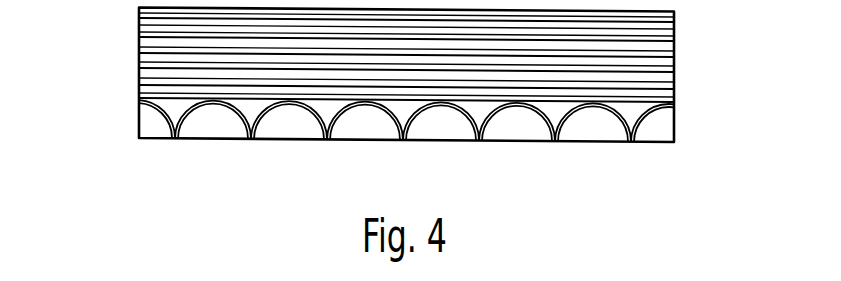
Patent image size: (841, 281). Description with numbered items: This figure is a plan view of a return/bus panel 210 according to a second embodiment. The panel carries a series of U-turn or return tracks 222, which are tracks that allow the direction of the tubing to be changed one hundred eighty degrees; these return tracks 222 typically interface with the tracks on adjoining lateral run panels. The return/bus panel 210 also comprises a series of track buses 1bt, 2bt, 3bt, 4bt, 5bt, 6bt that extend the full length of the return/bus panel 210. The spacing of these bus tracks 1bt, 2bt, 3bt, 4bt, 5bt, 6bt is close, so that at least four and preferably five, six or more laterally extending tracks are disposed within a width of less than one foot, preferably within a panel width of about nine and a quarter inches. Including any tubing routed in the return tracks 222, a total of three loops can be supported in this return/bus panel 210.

The track bus 1bt is at (139, 21).
The track bus 2bt is at (139, 39).
The track bus 3bt is at (139, 62).
The track bus 4bt is at (139, 80).
The track bus 5bt is at (139, 97).
The track bus 6bt is at (360, 154).
The return/bus panel 210 is at (386, 110).
The return tracks 222 is at (139, 101).